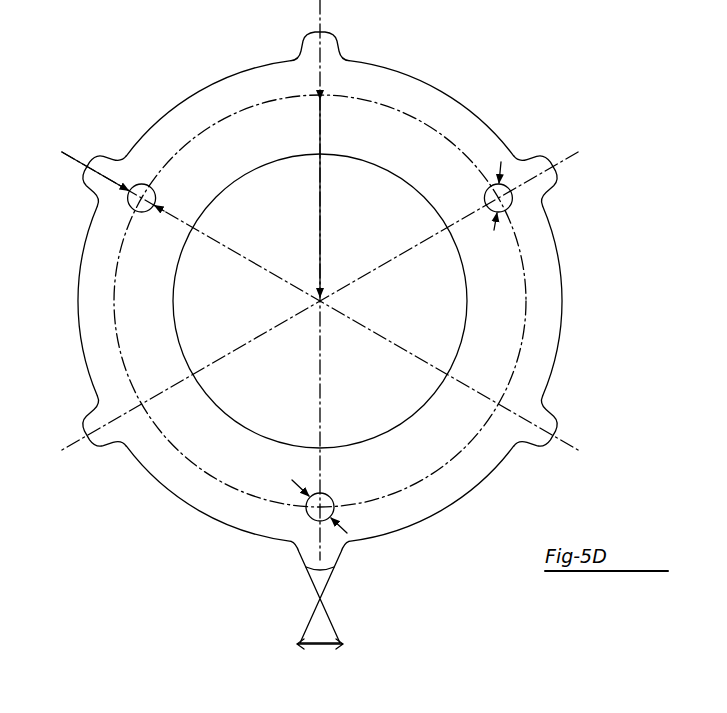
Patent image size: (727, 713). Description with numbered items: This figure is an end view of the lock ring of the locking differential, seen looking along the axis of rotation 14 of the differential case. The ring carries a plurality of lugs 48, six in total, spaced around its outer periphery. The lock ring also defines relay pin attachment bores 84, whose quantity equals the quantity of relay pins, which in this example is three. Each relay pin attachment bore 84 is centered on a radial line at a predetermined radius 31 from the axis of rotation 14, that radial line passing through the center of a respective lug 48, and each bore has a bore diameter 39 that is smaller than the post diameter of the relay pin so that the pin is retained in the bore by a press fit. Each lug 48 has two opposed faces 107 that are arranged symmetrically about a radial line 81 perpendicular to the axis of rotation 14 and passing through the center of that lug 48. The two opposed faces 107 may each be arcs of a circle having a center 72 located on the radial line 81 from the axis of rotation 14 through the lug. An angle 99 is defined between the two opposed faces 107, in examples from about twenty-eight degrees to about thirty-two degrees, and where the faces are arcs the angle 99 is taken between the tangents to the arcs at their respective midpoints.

The axis of rotation 14 is at (316, 302).
The predetermined radius 31 is at (322, 222).
The bore diameter 39 is at (91, 189).
The lug 48 is at (325, 45).
The center 72 is at (100, 420).
The radial line 81 is at (316, 410).
The relay pin attachment bore 84 is at (157, 194).
The angle 99 is at (320, 648).
The opposed faces 107 is at (294, 56).